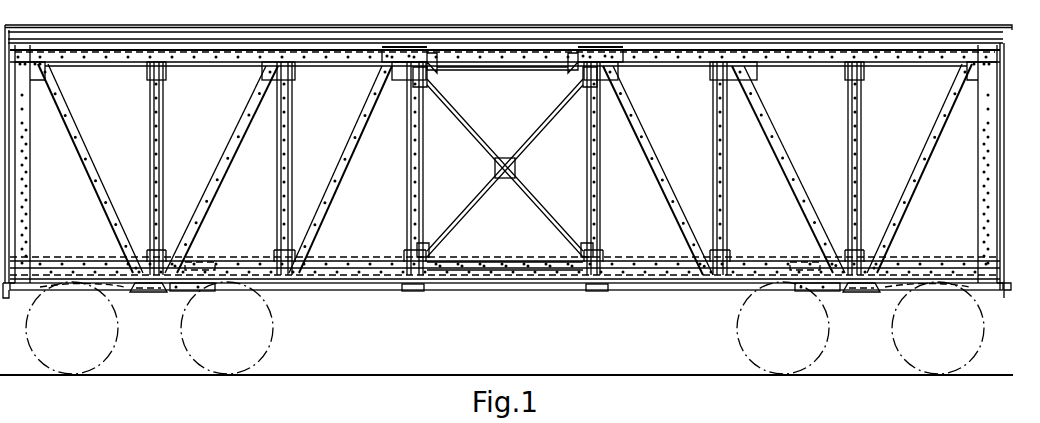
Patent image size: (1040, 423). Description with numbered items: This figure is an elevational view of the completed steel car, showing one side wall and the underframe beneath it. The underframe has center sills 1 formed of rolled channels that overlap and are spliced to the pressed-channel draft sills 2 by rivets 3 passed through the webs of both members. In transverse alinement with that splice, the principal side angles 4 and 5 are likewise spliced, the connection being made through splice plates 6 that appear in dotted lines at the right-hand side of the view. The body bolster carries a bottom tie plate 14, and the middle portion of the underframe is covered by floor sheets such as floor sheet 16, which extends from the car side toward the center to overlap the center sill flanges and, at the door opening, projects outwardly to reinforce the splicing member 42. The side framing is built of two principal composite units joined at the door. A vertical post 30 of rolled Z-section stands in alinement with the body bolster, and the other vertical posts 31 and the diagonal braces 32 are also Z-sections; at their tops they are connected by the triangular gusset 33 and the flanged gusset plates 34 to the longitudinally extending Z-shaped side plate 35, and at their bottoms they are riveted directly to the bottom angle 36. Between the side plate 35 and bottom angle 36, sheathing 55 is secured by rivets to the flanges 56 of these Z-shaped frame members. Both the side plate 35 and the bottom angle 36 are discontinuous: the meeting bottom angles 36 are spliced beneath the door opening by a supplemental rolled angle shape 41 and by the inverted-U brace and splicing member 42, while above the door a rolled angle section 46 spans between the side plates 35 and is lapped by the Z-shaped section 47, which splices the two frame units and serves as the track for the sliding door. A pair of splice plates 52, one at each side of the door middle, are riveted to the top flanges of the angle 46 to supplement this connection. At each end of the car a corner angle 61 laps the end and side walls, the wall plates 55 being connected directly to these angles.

The center sills 1 is at (233, 286).
The draft sills 2 is at (188, 284).
The rivets 3 is at (194, 286).
The principal side angle 4 is at (247, 262).
The side angle 5 is at (108, 258).
The splice plates 6 is at (200, 263).
The bottom tie plate 14 is at (148, 292).
The floor sheet 16 is at (501, 258).
The vertical post 30 is at (162, 160).
The vertical posts 31 is at (290, 176).
The diagonal braces 32 is at (92, 168).
The triangular gusset plate 33 is at (148, 78).
The flanged gusset plates 34 is at (288, 75).
The side plate 35 is at (210, 62).
The bottom angle 36 is at (339, 275).
The supplemental rolled angle shape 41 is at (473, 278).
The supplemental brace and splicing member 42 is at (463, 267).
The rolled angle section 46 is at (496, 55).
The Z-shaped section 47 is at (500, 60).
The splice plates 52 is at (402, 50).
The sheathing 55 is at (498, 162).
The flanges 56 is at (150, 193).
The corner angles 61 is at (29, 241).